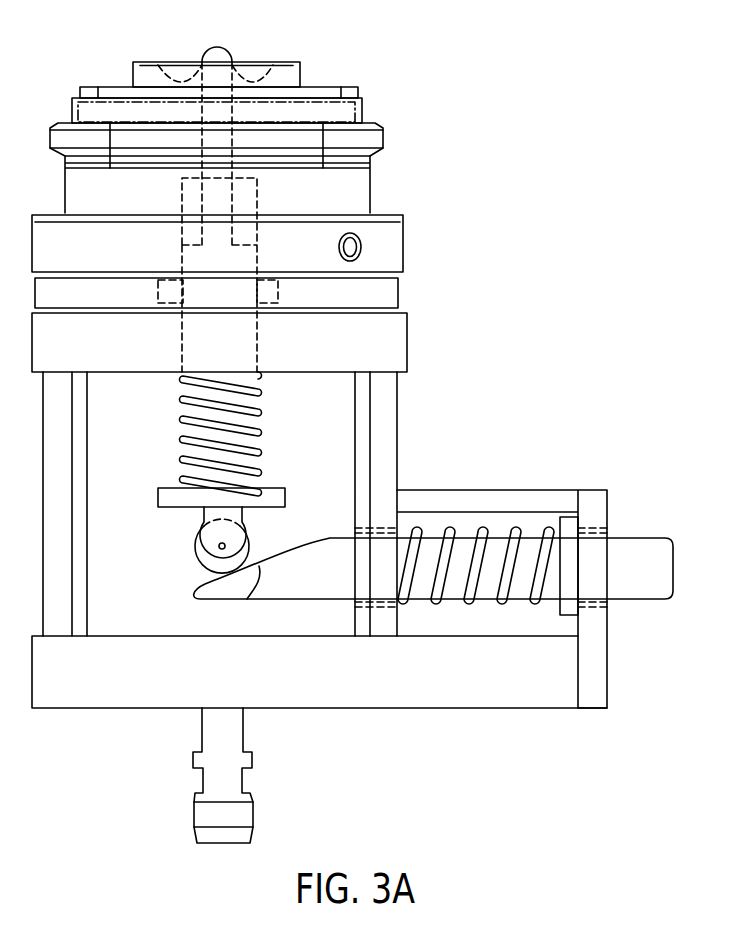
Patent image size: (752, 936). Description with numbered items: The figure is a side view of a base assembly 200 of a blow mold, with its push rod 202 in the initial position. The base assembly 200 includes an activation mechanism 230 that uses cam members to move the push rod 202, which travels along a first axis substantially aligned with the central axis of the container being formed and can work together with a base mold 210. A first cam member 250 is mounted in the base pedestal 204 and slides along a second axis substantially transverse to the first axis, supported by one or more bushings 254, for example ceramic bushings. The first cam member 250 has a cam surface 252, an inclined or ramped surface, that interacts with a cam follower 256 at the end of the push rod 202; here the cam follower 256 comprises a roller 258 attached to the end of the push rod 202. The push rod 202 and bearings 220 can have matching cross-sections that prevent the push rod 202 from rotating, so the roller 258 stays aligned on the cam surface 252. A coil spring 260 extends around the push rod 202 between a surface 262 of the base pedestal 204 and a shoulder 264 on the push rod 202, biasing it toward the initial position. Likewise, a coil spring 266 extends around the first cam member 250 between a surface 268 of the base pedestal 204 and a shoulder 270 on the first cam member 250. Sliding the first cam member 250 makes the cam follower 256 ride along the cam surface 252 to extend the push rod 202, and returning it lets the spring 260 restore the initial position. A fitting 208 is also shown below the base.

The base assembly 200 is at (409, 71).
The push rod 202 is at (217, 205).
The base pedestal 204 is at (397, 342).
The fitting 208 is at (240, 817).
The base mold 210 is at (295, 75).
The bearings 220 is at (243, 140).
The activation mechanism 230 is at (276, 433).
The first cam member 250 is at (314, 588).
The cam surface 252 is at (251, 580).
The bushings 254 is at (383, 613).
The cam follower 256 is at (178, 553).
The roller 258 is at (203, 547).
The coil spring 260 is at (182, 419).
The surface 262 is at (120, 373).
The shoulder 264 is at (277, 498).
The coil spring 266 is at (483, 528).
The surface 268 is at (397, 523).
The shoulder 270 is at (567, 522).